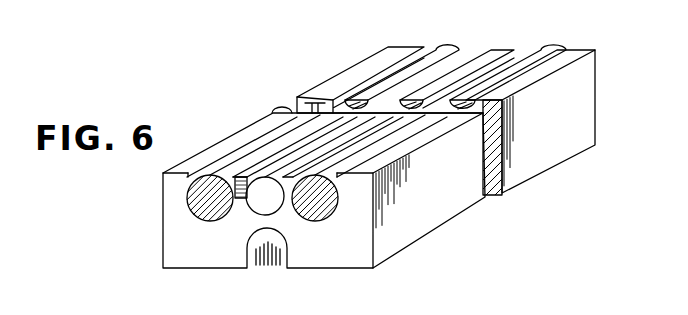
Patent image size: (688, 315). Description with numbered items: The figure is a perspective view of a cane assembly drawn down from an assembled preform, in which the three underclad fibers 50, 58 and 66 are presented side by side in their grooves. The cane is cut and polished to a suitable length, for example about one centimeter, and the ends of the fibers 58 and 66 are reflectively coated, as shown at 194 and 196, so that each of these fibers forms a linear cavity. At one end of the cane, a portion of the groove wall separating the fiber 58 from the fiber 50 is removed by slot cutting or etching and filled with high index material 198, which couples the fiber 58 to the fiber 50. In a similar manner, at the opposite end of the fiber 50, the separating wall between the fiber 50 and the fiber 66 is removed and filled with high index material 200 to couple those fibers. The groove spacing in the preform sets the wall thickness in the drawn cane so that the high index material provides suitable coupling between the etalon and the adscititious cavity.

The underclad fiber 50 is at (408, 60).
The underclad fiber 58 is at (360, 68).
The underclad fiber 66 is at (557, 70).
The reflective coating 194 is at (202, 207).
The reflective coating 196 is at (447, 47).
The high index material 198 is at (258, 168).
The high index material 200 is at (503, 50).